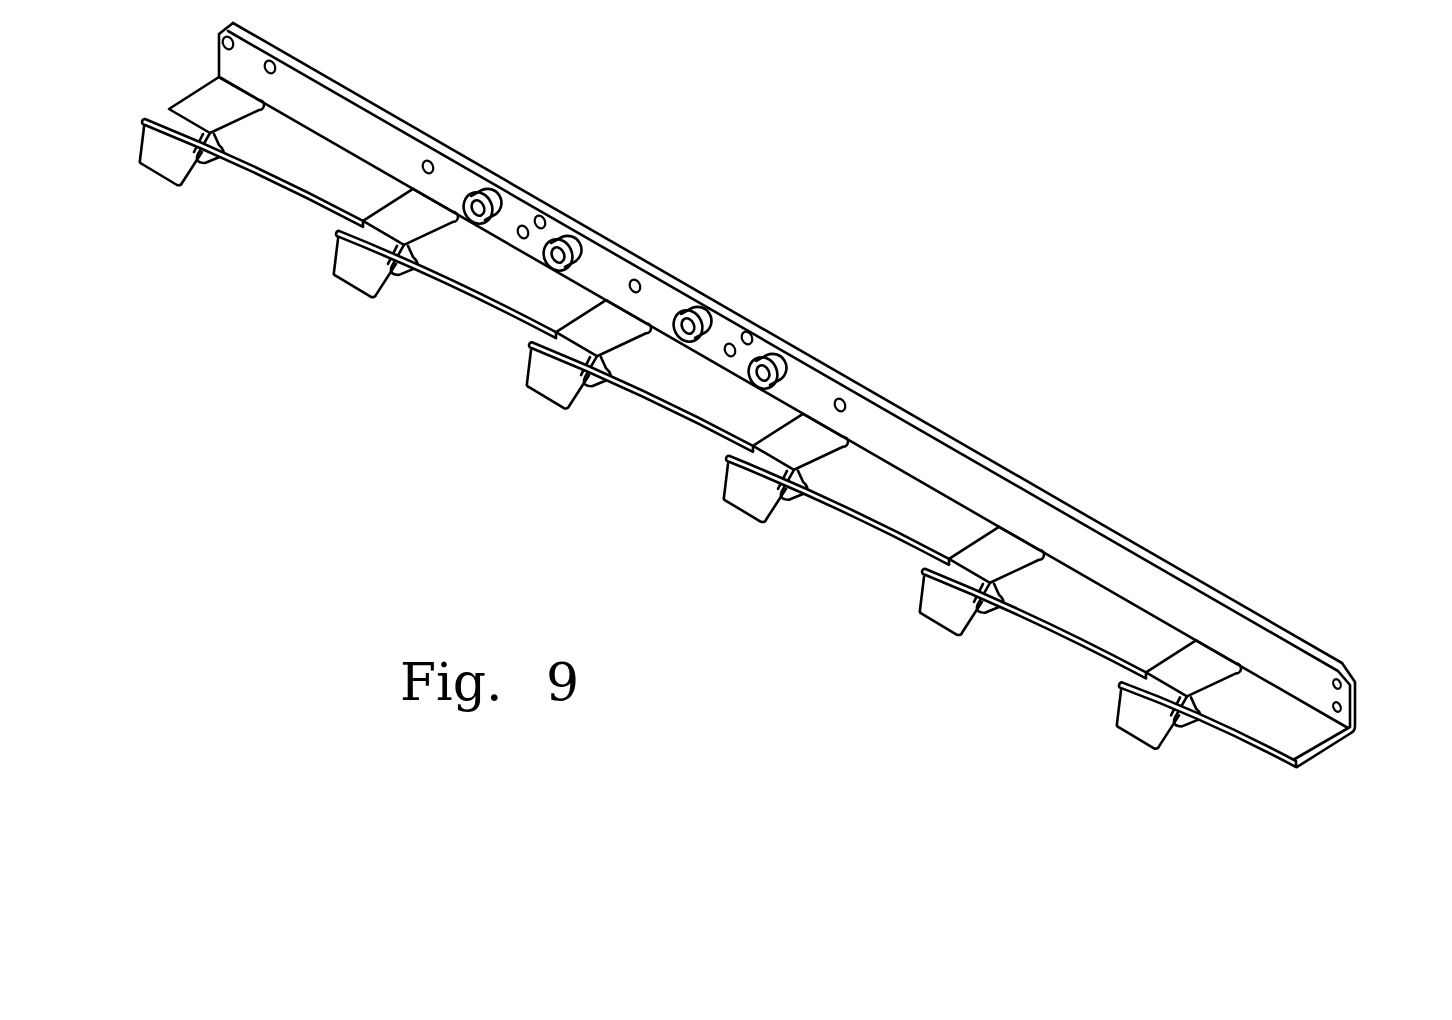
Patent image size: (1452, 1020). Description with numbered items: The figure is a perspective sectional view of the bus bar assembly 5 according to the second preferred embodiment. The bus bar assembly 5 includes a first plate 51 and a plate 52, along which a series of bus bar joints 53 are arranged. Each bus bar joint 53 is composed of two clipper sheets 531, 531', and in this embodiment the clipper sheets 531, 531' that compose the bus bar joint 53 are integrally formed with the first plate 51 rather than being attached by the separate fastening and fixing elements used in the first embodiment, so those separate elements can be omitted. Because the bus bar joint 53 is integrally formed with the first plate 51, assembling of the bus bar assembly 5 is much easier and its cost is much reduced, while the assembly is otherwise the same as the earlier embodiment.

The bus bar assembly 5 is at (795, 412).
The first plate 51 is at (1270, 722).
The vertical plate of mounting bar 52 is at (1140, 583).
The bus bar joint 53 is at (558, 384).
The clipper sheet 531 is at (586, 464).
The clipper sheet 531' is at (528, 392).